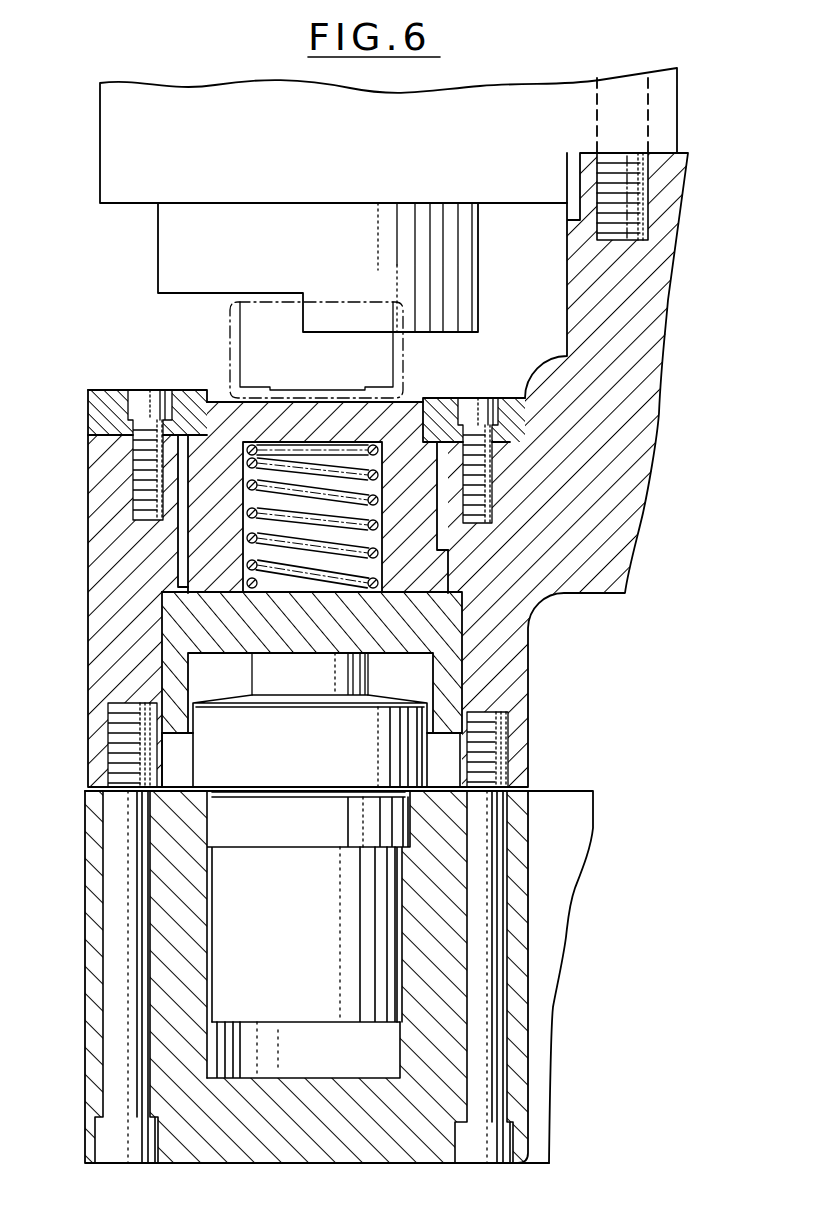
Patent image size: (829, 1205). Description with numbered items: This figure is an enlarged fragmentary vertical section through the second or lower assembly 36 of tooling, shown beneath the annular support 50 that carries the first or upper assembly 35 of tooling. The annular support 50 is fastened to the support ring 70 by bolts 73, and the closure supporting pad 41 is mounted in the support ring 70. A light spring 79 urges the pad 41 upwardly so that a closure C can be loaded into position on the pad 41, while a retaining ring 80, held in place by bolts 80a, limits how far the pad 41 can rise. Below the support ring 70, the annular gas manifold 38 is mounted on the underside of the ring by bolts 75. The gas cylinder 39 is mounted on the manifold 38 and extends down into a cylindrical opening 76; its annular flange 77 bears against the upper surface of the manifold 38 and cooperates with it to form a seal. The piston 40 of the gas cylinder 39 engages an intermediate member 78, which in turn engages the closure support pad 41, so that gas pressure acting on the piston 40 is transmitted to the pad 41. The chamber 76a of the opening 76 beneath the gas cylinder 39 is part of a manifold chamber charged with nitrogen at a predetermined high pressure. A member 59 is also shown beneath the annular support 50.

The first or upper assembly of tooling 35 is at (136, 73).
The annular support 50 is at (105, 155).
The projection member 59 is at (158, 250).
The bolts 73 is at (632, 226).
The closure C is at (405, 365).
The closure supporting pad 41 is at (213, 413).
The light spring 79 is at (300, 467).
The retaining ring 80 is at (90, 413).
The bolts 80a is at (144, 400).
The support ring 70 is at (95, 570).
The intermediate member 78 is at (447, 631).
The second or lower assembly of tooling 36 is at (552, 705).
The piston 40 is at (280, 685).
The annular flange 77 is at (308, 768).
The annular gas manifold 38 is at (74, 998).
The bolts 75 is at (120, 922).
The cylindrical openings 76 is at (212, 900).
The gas cylinder 39 is at (262, 971).
The chamber 76a is at (315, 1064).